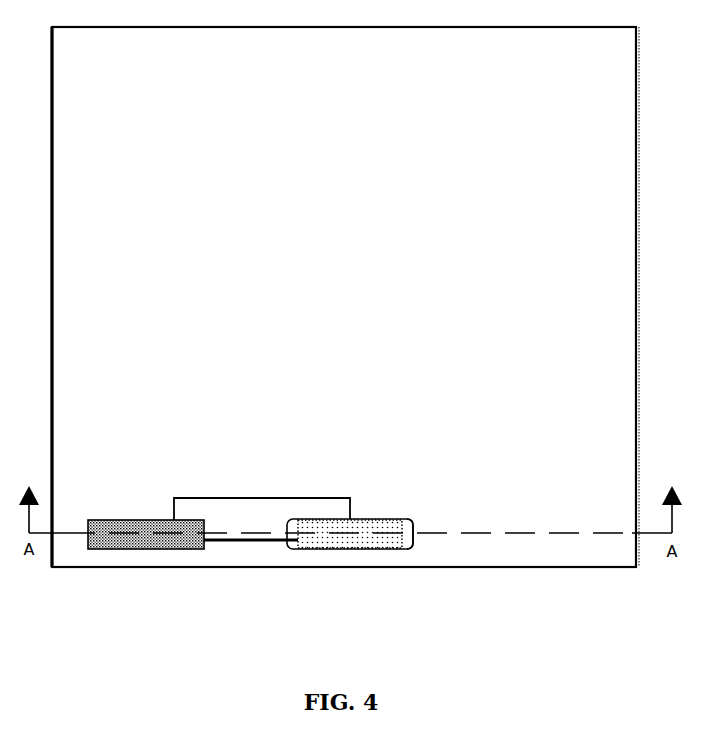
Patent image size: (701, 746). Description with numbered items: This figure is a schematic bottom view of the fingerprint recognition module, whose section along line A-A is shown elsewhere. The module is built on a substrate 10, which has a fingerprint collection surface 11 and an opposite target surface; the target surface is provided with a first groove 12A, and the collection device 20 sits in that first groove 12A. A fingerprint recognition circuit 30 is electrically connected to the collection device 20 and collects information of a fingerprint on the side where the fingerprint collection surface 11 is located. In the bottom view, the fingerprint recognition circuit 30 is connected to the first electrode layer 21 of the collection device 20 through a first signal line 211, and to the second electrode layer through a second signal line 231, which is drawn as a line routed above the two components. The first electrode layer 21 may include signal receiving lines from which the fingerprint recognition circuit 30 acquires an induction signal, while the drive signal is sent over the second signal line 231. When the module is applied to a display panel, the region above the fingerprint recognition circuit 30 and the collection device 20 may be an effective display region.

The substrate 10 is at (544, 582).
The fingerprint collection surface 11 is at (618, 560).
The first groove 12A is at (424, 552).
The collection device 20 is at (349, 607).
The first electrode layer 21 is at (349, 564).
The first signal line 211 is at (247, 555).
The second signal line 231 is at (250, 484).
The fingerprint recognition circuit 30 is at (161, 563).